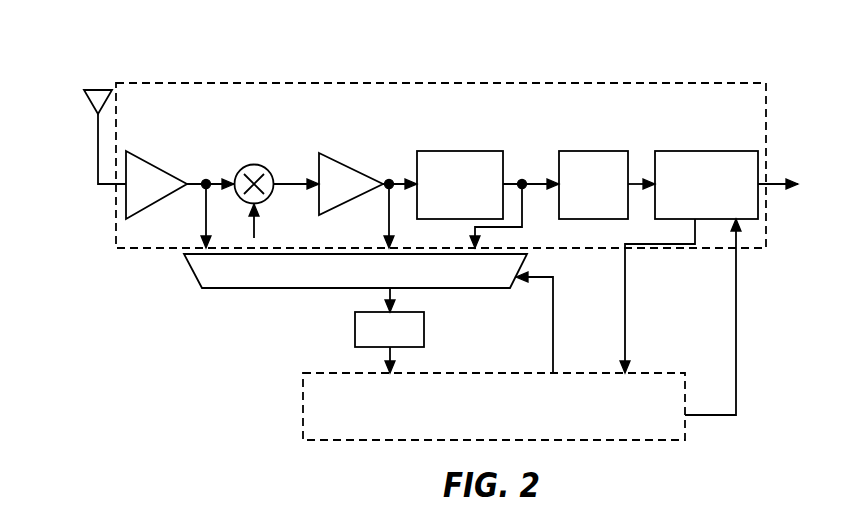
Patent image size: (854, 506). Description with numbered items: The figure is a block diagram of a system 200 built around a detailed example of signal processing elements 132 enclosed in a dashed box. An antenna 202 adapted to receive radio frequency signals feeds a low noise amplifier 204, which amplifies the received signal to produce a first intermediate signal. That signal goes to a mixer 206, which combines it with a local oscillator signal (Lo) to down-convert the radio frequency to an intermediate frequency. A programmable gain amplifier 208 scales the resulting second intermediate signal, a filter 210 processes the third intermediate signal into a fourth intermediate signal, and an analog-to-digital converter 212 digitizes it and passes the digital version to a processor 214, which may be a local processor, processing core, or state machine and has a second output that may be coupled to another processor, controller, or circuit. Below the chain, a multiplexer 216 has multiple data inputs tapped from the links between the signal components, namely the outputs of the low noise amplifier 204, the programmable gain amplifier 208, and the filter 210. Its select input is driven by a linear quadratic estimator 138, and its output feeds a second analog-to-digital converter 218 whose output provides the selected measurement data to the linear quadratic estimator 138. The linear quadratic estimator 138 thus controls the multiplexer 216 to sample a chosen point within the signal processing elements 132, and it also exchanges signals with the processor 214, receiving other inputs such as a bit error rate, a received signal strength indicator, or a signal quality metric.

The system 200 is at (128, 40).
The antenna 202 is at (97, 88).
The low noise amplifier 204 is at (142, 165).
The mixer 206 is at (262, 152).
The programmable gain amplifier 208 is at (340, 160).
The filter 210 is at (441, 150).
The analog-to-digital converter 212 is at (587, 150).
The processor 214 is at (706, 150).
The signal processing elements 132 is at (150, 250).
The multiplexer 216 is at (232, 290).
The analog-to-digital converter 218 is at (355, 330).
The linear quadratic estimator 138 is at (303, 413).